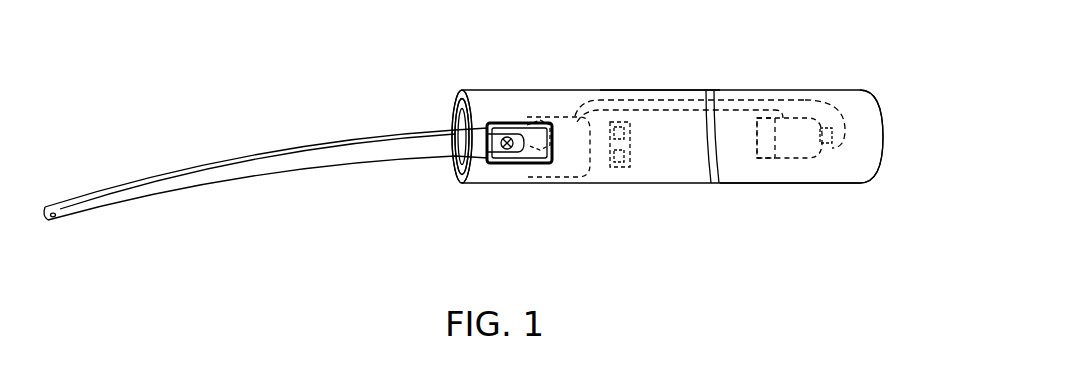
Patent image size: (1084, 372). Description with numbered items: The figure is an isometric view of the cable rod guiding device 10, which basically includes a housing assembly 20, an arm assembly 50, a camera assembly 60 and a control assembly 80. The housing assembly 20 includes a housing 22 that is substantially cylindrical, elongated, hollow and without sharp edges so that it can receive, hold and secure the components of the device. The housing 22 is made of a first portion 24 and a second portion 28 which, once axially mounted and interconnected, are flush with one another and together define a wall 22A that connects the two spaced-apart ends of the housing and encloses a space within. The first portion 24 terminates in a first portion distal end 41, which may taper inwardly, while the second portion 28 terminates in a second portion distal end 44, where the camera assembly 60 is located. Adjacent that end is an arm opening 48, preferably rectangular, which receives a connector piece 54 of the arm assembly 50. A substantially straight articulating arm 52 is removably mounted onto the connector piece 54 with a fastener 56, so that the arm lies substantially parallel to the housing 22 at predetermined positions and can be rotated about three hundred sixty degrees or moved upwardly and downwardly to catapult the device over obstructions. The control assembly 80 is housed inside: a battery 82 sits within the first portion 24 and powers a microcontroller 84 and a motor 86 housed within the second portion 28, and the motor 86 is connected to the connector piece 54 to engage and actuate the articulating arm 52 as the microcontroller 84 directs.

The cable rod guiding device 10 is at (316, 104).
The housing assembly 20 is at (655, 90).
The housing 22 is at (620, 90).
The wall 22A is at (567, 100).
The first portion 24 is at (755, 183).
The second portion 28 is at (680, 183).
The first portion distal end 41 is at (893, 127).
The second portion distal end 44 is at (455, 178).
The arm opening 48 is at (505, 163).
The arm assembly 50 is at (280, 173).
The articulating arm 52 is at (240, 172).
The connector piece 54 is at (547, 163).
The fastener 56 is at (512, 130).
The camera assembly 60 is at (456, 113).
The control assembly 80 is at (764, 119).
The battery 82 is at (797, 142).
The microcontroller 84 is at (618, 148).
The motor 86 is at (573, 143).